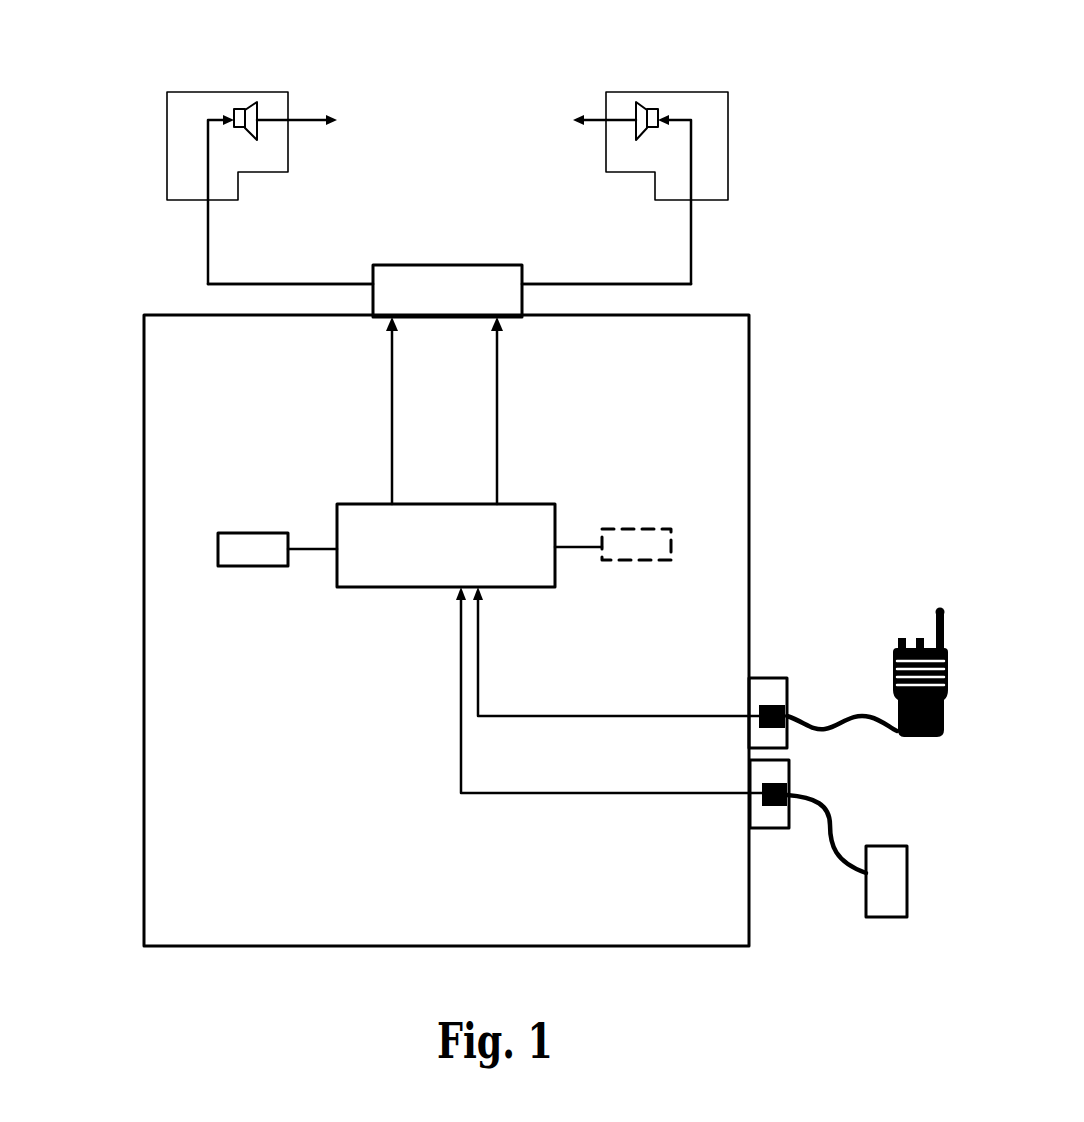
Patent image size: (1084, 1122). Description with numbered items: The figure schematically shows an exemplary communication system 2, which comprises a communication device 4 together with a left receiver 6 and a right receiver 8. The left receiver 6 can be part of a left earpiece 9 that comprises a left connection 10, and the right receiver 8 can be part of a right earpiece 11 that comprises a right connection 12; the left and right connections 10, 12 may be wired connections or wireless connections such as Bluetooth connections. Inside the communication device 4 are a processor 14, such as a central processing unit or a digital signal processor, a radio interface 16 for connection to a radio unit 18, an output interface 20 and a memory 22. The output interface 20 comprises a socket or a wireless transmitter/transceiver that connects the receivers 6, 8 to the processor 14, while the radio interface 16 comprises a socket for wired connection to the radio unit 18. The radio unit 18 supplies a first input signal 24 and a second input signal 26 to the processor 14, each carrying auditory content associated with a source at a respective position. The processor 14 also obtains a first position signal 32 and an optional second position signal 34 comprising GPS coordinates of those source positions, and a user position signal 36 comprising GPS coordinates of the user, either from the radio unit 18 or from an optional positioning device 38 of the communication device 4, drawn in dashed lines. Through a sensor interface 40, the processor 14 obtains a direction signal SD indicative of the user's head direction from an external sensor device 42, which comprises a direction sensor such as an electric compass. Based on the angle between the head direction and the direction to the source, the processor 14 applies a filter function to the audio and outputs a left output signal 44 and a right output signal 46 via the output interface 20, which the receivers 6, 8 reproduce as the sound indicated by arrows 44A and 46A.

The communication system 2 is at (108, 147).
The communication device 4 is at (753, 338).
The left receiver 6 is at (240, 105).
The right receiver 8 is at (645, 105).
The left earpiece 9 is at (166, 178).
The left connection 10 is at (253, 284).
The right earpiece 11 is at (728, 187).
The right connection 12 is at (662, 276).
The processor 14 is at (398, 590).
The radio interface 16 is at (790, 707).
The radio unit 18 is at (922, 738).
The output interface 20 is at (463, 265).
The memory 22 is at (248, 533).
The first input signal 24 is at (616, 651).
The second input signal 26 is at (616, 651).
The first position signal 32 is at (616, 651).
The second position signal 34 is at (550, 682).
The user position signal 36 is at (566, 548).
The positioning device 38 is at (630, 530).
The sensor interface 40 is at (792, 785).
The external sensor device 42 is at (887, 914).
The left output signal 44 is at (208, 251).
The left sound output 44A is at (308, 118).
The right output signal 46 is at (692, 250).
The right sound output 46A is at (583, 118).
The direction signal SD is at (553, 797).